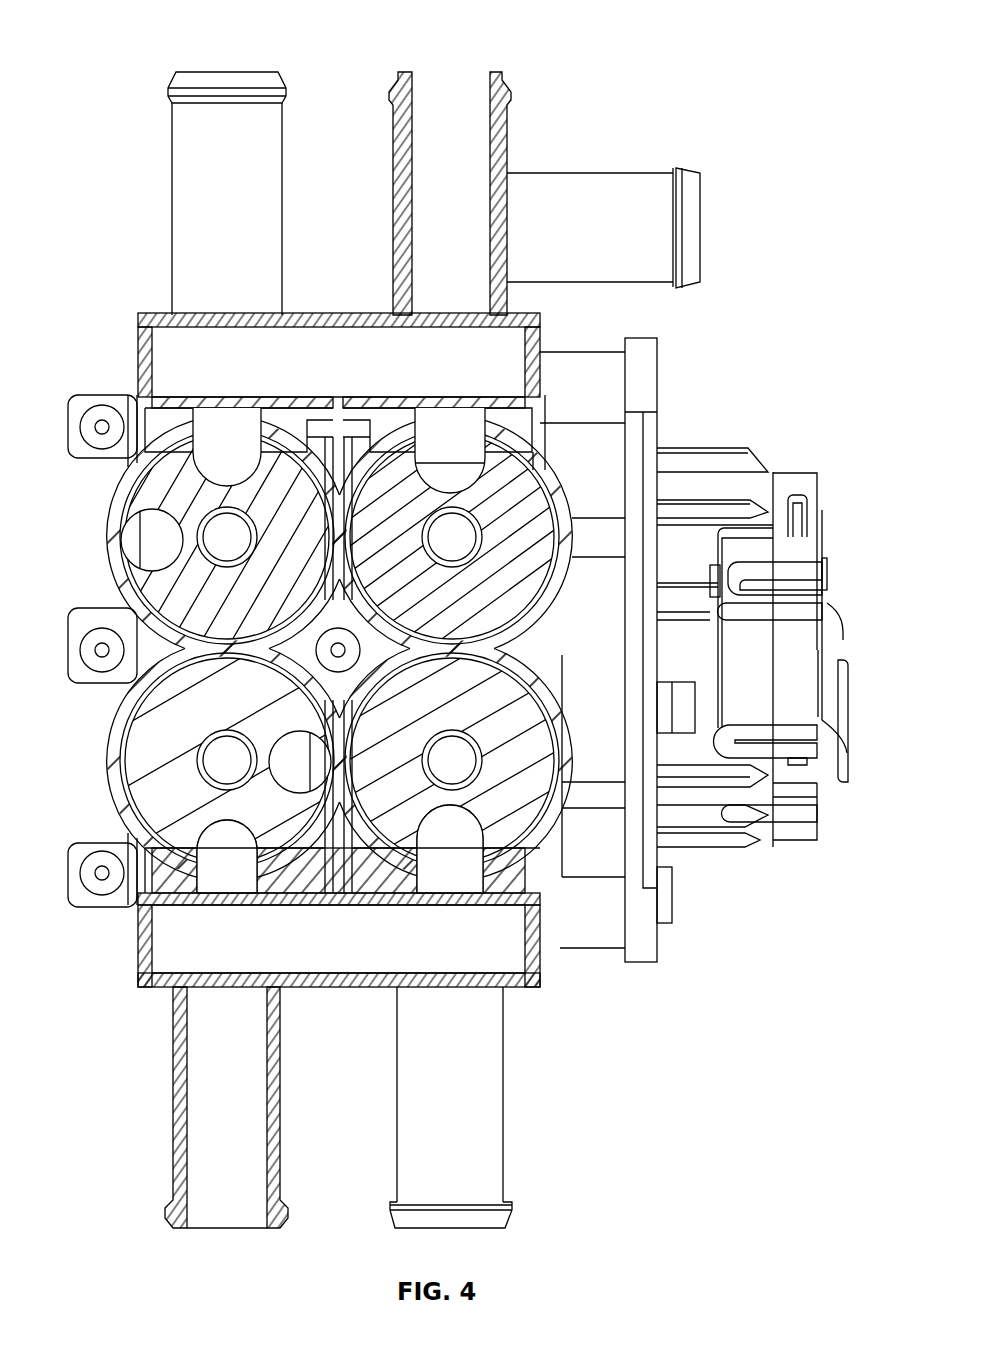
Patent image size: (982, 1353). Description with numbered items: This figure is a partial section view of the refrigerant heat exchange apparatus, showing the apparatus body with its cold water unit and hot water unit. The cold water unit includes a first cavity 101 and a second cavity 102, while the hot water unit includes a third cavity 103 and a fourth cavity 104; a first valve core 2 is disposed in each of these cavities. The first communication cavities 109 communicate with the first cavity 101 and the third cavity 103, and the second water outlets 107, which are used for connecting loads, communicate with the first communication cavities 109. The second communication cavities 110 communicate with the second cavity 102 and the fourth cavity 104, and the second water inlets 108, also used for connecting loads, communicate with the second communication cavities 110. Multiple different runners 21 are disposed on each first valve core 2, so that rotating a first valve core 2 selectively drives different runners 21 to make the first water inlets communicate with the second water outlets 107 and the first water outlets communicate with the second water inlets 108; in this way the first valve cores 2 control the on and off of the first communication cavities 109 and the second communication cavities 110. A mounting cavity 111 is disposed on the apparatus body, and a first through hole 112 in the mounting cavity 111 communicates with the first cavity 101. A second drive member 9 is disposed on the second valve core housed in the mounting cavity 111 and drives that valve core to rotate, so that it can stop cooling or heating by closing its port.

The second water outlet 107 is at (230, 72).
The second water inlet 108 is at (175, 1187).
The first communication cavity 109 is at (140, 327).
The second communication cavity 110 is at (457, 908).
The mounting cavity 111 is at (228, 403).
The first through hole 112 is at (213, 900).
The first cavity 101 is at (560, 468).
The second cavity 102 is at (578, 800).
The third cavity 103 is at (120, 492).
The fourth cavity 104 is at (128, 750).
The runner 21 is at (145, 540).
The first valve core 2 is at (150, 803).
The second drive member 9 is at (773, 843).